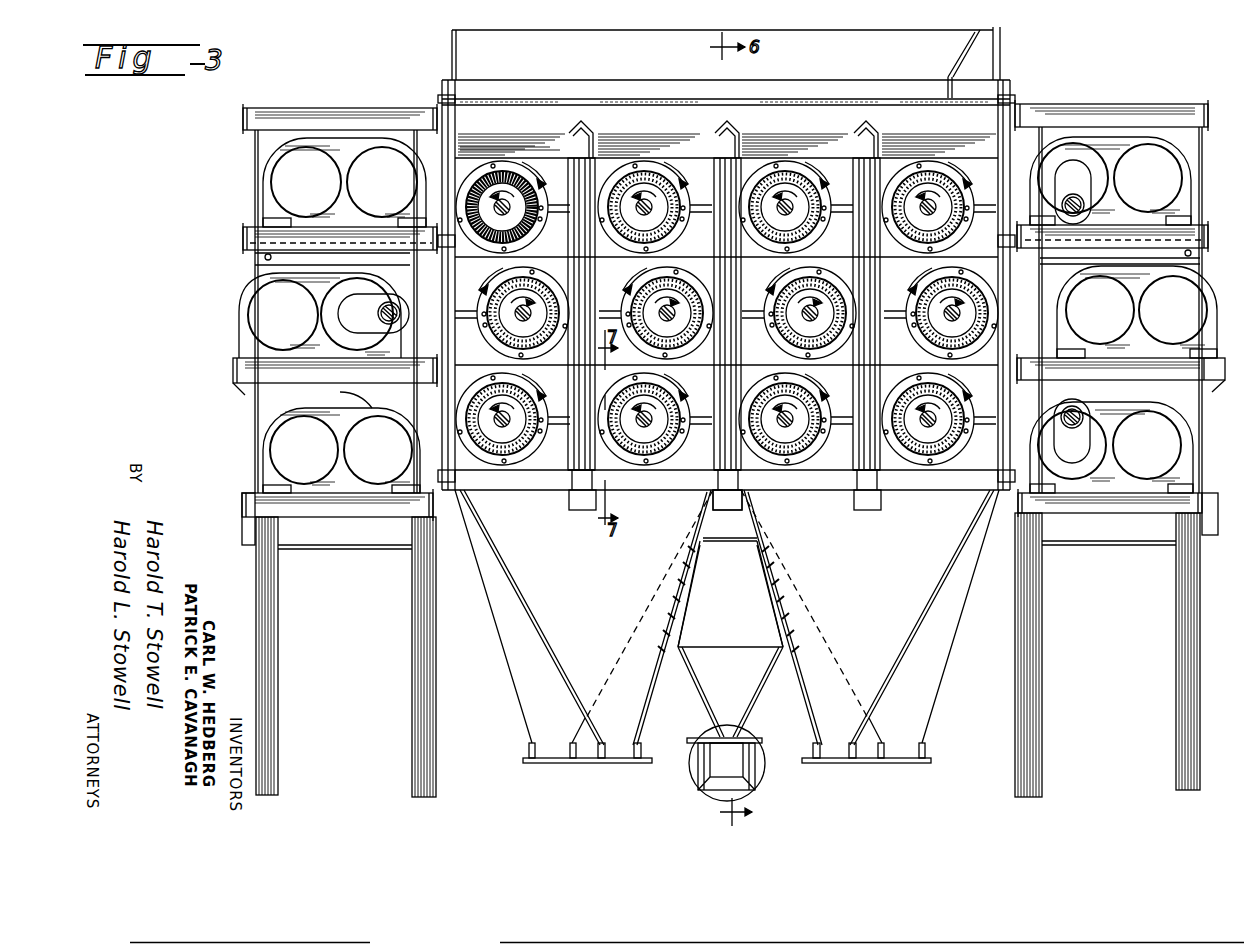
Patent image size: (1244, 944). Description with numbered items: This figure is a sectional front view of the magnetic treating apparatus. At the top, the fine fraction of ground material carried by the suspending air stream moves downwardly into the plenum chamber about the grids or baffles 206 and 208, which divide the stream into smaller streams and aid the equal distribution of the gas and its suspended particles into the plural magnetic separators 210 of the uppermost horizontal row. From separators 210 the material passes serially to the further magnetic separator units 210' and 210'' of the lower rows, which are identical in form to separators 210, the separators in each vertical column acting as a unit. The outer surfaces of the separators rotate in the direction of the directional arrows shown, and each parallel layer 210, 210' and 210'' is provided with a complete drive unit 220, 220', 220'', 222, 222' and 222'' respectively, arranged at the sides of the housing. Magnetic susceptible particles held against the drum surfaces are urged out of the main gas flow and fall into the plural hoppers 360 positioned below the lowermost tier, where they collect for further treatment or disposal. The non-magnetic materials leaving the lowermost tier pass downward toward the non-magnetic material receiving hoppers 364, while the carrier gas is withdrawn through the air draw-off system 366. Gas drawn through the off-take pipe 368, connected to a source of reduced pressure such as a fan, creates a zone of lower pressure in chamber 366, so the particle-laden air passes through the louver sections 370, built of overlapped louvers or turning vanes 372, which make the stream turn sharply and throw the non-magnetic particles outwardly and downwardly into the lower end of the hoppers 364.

The grid or baffle 206 is at (568, 125).
The grid or baffle 208 is at (516, 148).
The magnetic separators of uppermost row 210 is at (726, 181).
The magnetic separator units of second row 210' is at (730, 313).
The magnetic separator units of lowermost row 210'' is at (726, 443).
The drive unit 220 is at (317, 182).
The drive unit 220' is at (1142, 304).
The drive unit 220'' is at (309, 442).
The drive unit 222 is at (1137, 181).
The drive unit 222' is at (298, 305).
The drive unit 222'' is at (1137, 444).
The hopper 360 is at (520, 690).
The non-magnetic material receiving hopper 364 is at (650, 735).
The air draw-off system 366 is at (745, 690).
The off-take pipe 368 is at (750, 785).
The louver section 370 is at (770, 600).
The louver or turning vane 372 is at (690, 600).